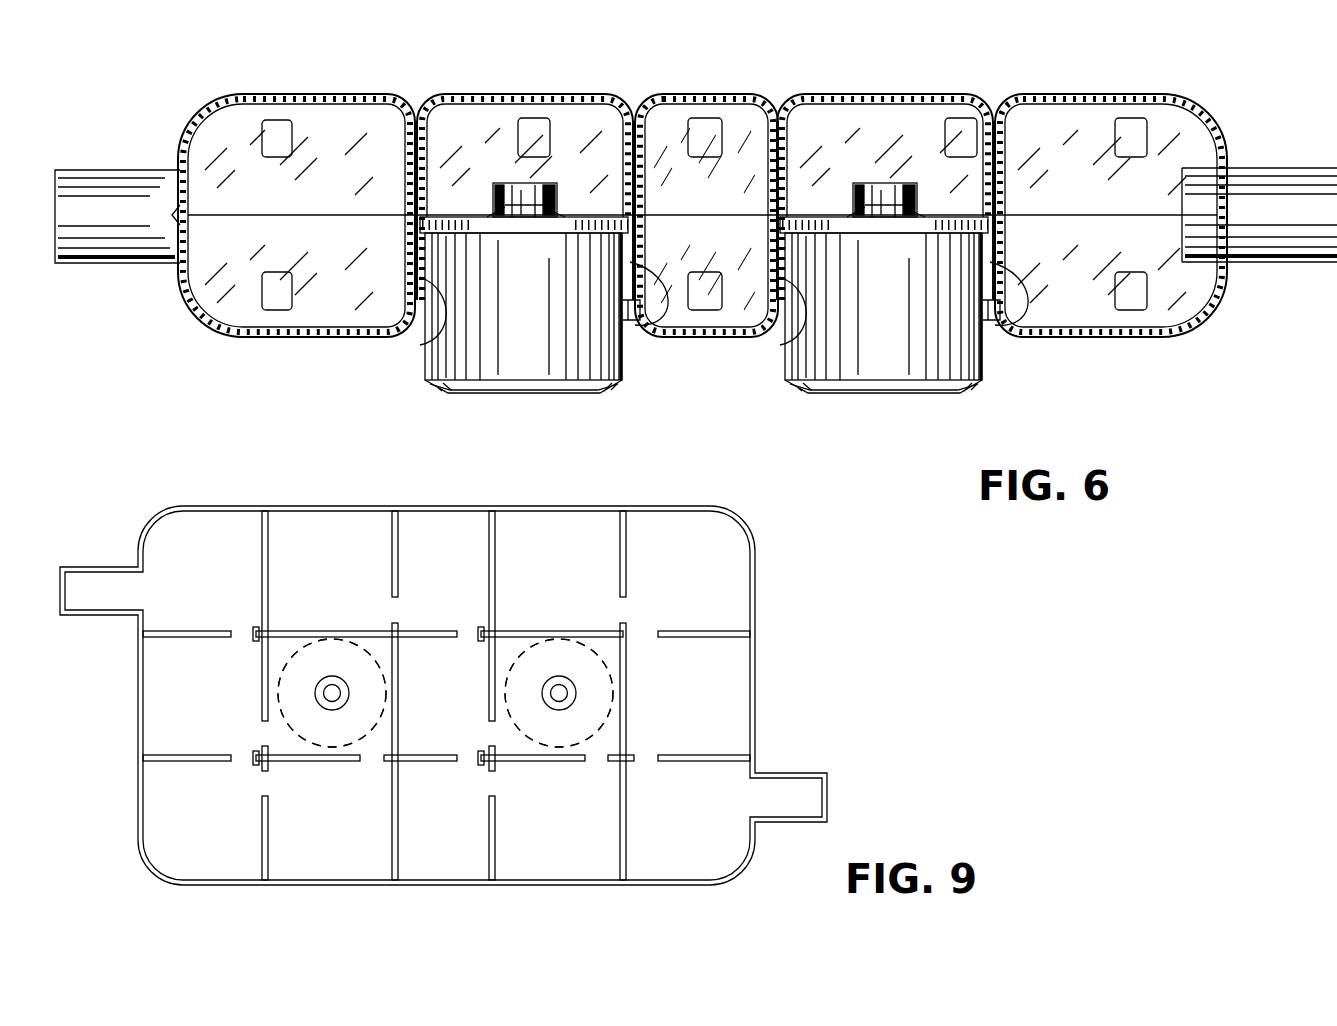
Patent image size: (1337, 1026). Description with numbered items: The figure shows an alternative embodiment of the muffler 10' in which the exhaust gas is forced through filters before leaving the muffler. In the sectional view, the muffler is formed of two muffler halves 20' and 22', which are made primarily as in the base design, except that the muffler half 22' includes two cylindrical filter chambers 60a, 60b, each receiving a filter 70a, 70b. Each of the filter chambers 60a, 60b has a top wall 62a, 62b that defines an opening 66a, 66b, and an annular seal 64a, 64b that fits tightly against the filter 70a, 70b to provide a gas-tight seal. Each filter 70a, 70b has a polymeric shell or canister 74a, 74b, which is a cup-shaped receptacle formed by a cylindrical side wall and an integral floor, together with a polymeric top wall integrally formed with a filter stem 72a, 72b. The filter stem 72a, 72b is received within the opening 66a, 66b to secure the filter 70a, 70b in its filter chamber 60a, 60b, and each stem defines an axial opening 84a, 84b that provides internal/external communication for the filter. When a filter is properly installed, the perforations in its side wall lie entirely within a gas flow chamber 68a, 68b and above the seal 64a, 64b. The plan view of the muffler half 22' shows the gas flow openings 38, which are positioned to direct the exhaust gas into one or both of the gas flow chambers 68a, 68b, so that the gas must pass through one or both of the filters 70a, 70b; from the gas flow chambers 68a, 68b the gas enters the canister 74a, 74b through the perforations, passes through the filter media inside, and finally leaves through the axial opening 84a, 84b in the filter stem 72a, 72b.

In FIG. 6, the muffler 10' is at (890, 163).
In FIG. 6, the muffler half 20' is at (296, 185).
In FIG. 6, the muffler half 22' is at (296, 250).
In FIG. 9, the muffler half 22' is at (443, 673).
In FIG. 9, the gas flow openings 38 is at (241, 628).
In FIG. 6, the filter chamber 60a is at (445, 322).
In FIG. 9, the filter chamber 60a is at (284, 670).
In FIG. 6, the filter chamber 60b is at (800, 330).
In FIG. 9, the filter chamber 60b is at (600, 667).
In FIG. 6, the top wall 62a is at (450, 216).
In FIG. 9, the top wall 62a is at (342, 745).
In FIG. 6, the top wall 62b is at (812, 216).
In FIG. 9, the top wall 62b is at (570, 745).
In FIG. 6, the annular seal 64a is at (636, 335).
In FIG. 6, the annular seal 64b is at (992, 340).
In FIG. 6, the opening 66a is at (500, 183).
In FIG. 9, the opening 66a is at (333, 677).
In FIG. 6, the opening 66b is at (858, 183).
In FIG. 9, the opening 66b is at (559, 677).
In FIG. 6, the gas flow chamber 68a is at (655, 315).
In FIG. 6, the gas flow chamber 68b is at (1027, 320).
In FIG. 6, the filter 70a is at (563, 394).
In FIG. 6, the filter 70b is at (845, 394).
In FIG. 6, the filter stem 72a is at (527, 183).
In FIG. 6, the filter stem 72b is at (893, 183).
In FIG. 6, the canister 74a is at (452, 368).
In FIG. 6, the canister 74b is at (912, 372).
In FIG. 9, the axial opening 84a is at (335, 702).
In FIG. 9, the axial opening 84b is at (563, 703).